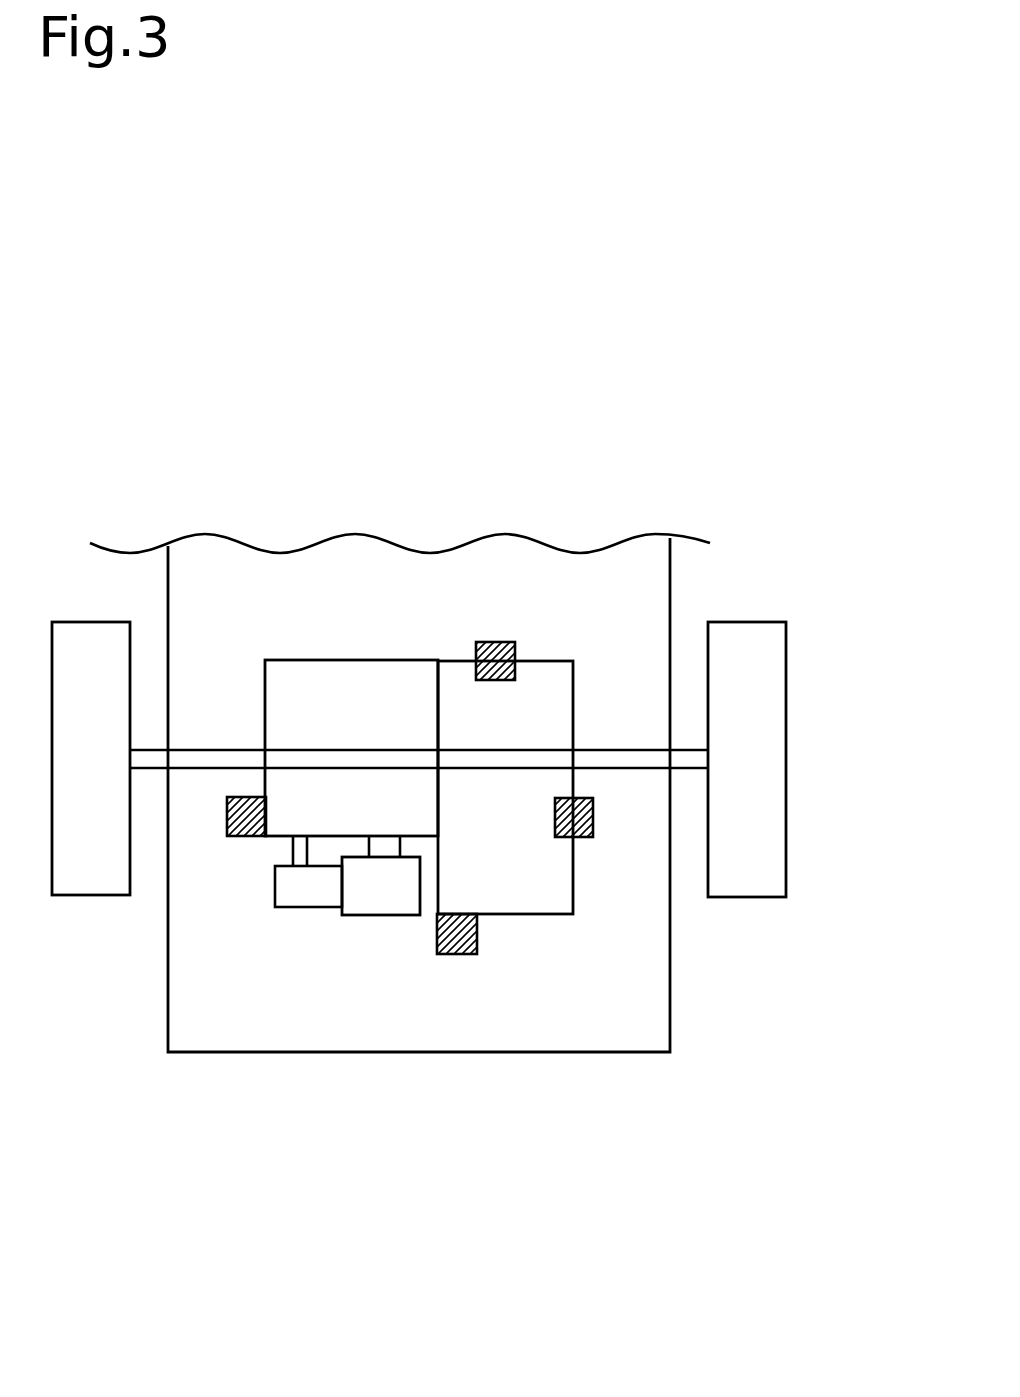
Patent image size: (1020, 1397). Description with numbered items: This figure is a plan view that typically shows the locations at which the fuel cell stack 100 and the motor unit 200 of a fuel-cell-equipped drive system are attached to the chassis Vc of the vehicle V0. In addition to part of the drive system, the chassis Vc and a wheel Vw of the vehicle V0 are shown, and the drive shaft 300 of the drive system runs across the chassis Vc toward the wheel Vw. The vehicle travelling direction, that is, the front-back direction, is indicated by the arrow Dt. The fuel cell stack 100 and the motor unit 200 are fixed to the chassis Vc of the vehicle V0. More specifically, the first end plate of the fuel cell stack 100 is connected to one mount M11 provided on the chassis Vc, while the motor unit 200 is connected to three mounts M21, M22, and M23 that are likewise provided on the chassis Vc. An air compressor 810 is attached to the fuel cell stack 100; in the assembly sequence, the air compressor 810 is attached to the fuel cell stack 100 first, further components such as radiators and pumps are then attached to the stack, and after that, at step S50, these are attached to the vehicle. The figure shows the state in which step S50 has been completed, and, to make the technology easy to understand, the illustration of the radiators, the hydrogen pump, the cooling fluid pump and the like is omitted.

The fuel cell stack 100 is at (355, 660).
The motor unit 200 is at (575, 720).
The drive shaft 300 is at (218, 748).
The air compressor 810 is at (350, 917).
The mount M11 is at (238, 838).
The mount M21 is at (497, 640).
The mount M22 is at (583, 838).
The mount M23 is at (460, 955).
The vehicle V0 is at (400, 418).
The wheel Vw is at (745, 620).
The chassis Vc is at (622, 1055).
The arrow Dt is at (148, 1305).
The step S50 is at (823, 1130).